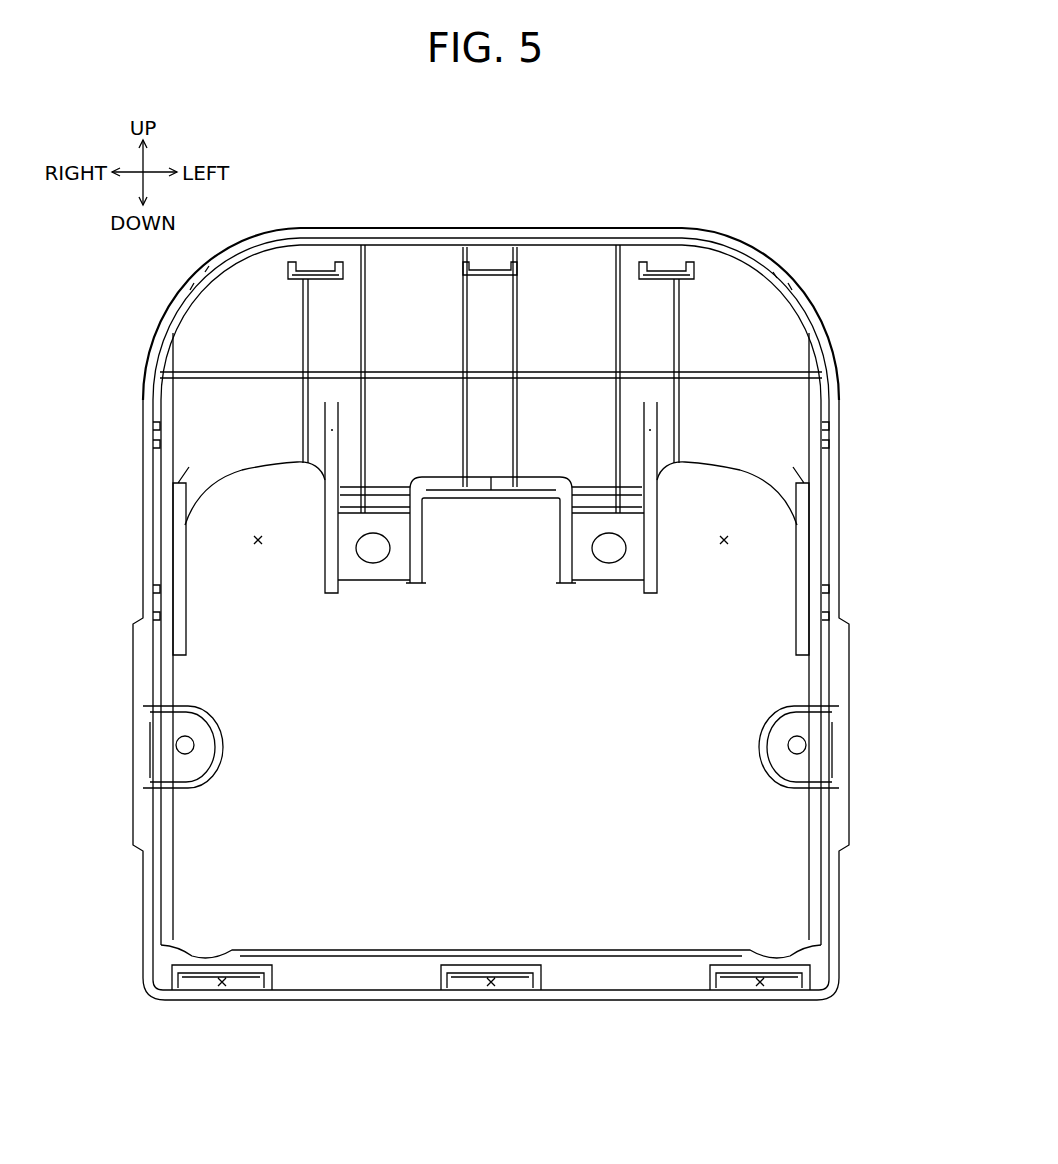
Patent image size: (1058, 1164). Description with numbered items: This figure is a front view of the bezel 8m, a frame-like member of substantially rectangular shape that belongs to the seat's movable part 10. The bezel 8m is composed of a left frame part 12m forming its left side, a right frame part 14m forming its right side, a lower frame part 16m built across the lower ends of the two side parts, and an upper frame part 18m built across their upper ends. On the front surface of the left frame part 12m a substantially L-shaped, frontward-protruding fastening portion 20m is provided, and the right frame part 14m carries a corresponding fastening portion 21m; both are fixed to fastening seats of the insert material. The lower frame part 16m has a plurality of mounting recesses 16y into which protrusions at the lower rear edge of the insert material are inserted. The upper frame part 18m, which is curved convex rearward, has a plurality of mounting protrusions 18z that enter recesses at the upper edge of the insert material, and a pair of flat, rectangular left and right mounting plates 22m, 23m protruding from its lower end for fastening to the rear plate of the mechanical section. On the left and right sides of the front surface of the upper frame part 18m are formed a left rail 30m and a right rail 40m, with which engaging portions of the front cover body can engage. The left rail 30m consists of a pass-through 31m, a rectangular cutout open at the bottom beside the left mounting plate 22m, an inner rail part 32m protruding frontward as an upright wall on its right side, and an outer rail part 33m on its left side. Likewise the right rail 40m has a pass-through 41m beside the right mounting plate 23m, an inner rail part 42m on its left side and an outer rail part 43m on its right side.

The bezel 8m is at (757, 180).
The movable part 10 is at (620, 349).
The left frame part 12m is at (840, 478).
The right frame part 14m is at (143, 478).
The lower frame part 16m is at (623, 970).
The mounting recesses 16y is at (221, 990).
The upper frame part 18m is at (562, 290).
The mounting protrusions 18z is at (313, 265).
The fastening portion 20m is at (796, 765).
The fastening portion 21m is at (186, 765).
The left mounting plate 22m is at (587, 565).
The right mounting plate 23m is at (395, 565).
The left rail 30m is at (647, 683).
The pass-through 31m is at (724, 545).
The inner rail part 32m is at (652, 545).
The outer rail part 33m is at (796, 578).
The right rail 40m is at (338, 683).
The pass-through 41m is at (258, 545).
The inner rail part 42m is at (332, 545).
The outer rail part 43m is at (186, 578).